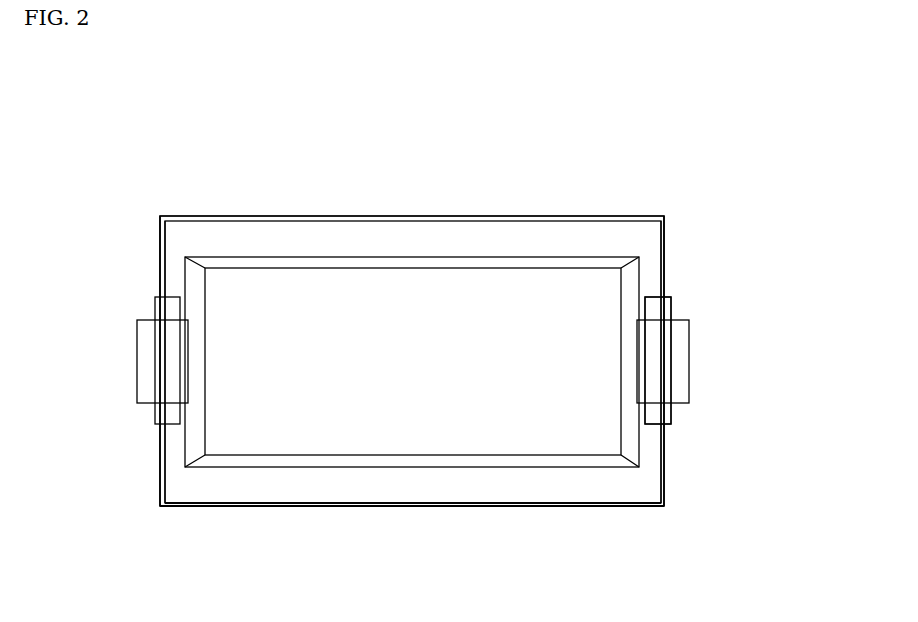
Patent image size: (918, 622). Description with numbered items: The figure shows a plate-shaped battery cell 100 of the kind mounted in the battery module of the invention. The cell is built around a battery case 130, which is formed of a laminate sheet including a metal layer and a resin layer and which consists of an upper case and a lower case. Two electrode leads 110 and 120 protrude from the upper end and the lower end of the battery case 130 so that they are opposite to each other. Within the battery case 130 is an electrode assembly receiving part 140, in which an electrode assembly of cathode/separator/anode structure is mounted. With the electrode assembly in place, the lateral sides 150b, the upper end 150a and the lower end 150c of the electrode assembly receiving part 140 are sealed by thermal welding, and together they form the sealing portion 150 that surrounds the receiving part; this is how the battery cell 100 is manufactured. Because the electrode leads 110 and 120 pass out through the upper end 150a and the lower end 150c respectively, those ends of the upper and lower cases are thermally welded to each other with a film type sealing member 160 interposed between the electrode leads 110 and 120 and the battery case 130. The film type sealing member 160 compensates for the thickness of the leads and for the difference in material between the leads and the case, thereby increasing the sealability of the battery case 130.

The plate-shaped battery cell 100 is at (172, 112).
The electrode lead 110 is at (678, 357).
The electrode lead 120 is at (142, 344).
The battery case 130 is at (406, 507).
The electrode assembly receiving part 140 is at (588, 299).
The sealing portion 150 is at (548, 235).
The upper end 150a is at (173, 445).
The lateral sides 150b is at (525, 487).
The lower end 150c is at (655, 465).
The film type sealing member 160 is at (650, 413).